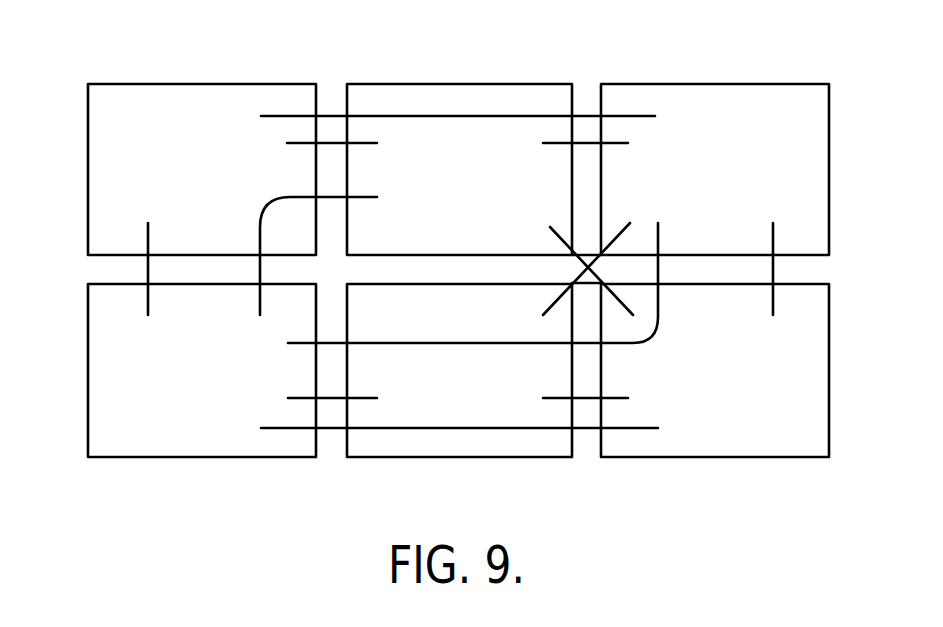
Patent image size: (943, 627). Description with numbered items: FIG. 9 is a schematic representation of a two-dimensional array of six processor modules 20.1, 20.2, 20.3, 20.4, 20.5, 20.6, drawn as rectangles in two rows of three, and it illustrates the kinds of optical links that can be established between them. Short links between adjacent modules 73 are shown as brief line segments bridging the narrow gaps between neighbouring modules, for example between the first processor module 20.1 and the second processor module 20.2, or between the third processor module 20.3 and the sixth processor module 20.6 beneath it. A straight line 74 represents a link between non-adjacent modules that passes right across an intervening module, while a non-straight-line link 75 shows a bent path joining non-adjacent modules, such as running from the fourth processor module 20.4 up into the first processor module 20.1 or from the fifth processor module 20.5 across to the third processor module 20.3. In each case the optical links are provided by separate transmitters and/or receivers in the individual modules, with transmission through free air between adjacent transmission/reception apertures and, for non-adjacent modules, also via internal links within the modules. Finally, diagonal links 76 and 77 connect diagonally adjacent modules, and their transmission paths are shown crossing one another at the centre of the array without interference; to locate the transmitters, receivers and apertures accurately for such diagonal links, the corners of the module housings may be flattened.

The processor module 20.1 is at (194, 84).
The processor module 20.2 is at (440, 84).
The processor module 20.3 is at (682, 84).
The processor module 20.4 is at (220, 457).
The processor module 20.5 is at (428, 457).
The processor module 20.6 is at (670, 457).
The optical link between adjacent modules 73 is at (363, 144).
The straight-line optical link 74 is at (522, 116).
The non-straight-line optical link 75 is at (260, 268).
The diagonal optical link 76 is at (548, 226).
The diagonal optical link 77 is at (630, 226).